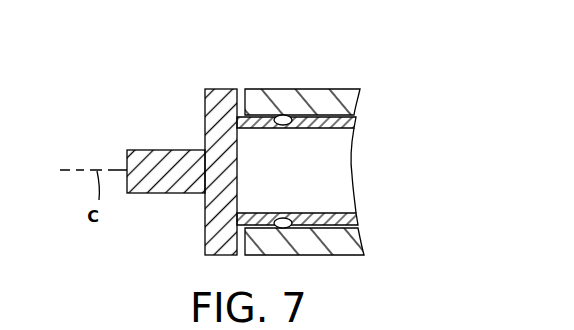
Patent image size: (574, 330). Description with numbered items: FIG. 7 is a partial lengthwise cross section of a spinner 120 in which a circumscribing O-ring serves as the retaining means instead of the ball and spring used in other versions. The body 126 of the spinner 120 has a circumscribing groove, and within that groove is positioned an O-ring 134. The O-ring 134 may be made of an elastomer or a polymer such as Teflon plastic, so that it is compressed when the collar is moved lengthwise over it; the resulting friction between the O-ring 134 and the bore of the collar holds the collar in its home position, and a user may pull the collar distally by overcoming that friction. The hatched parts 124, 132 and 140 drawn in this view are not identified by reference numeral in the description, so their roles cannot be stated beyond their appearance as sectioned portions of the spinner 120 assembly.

The spinner 120 is at (298, 68).
The shaft 124 is at (150, 150).
The body 126 is at (272, 131).
The housing 132 is at (356, 92).
The O-ring 134 is at (284, 218).
The flange 140 is at (225, 89).